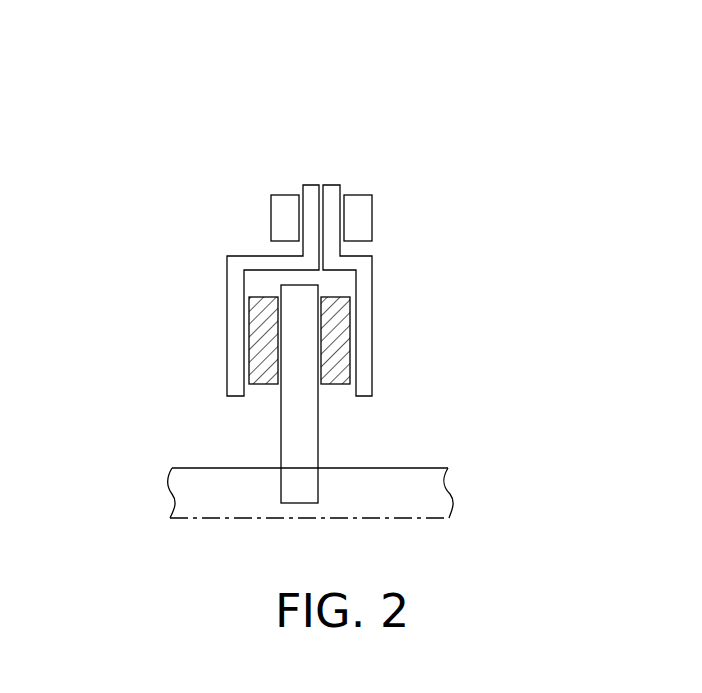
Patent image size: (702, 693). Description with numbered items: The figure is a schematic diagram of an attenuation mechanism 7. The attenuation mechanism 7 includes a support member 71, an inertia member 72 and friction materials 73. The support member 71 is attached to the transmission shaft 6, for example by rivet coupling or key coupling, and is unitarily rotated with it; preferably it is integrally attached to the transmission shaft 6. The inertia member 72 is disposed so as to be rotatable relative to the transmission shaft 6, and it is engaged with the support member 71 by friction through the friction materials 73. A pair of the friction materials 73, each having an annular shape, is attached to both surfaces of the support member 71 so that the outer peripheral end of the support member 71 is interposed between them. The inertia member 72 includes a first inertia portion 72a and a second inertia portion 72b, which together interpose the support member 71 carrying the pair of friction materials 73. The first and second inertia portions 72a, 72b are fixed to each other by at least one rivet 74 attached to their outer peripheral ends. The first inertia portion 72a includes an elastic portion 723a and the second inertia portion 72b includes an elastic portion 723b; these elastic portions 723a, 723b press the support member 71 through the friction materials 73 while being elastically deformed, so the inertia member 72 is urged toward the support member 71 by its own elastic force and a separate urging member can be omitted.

The attenuation mechanism 7 is at (395, 130).
The inertia member 72 is at (255, 242).
The first inertia portion 72a is at (223, 257).
The second inertia portion 72b is at (377, 253).
The elastic portion 723a is at (227, 337).
The elastic portion 723b is at (372, 324).
The rivet 74 is at (285, 195).
The friction materials 73 is at (330, 384).
The support member 71 is at (318, 437).
The transmission shaft 6 is at (435, 467).